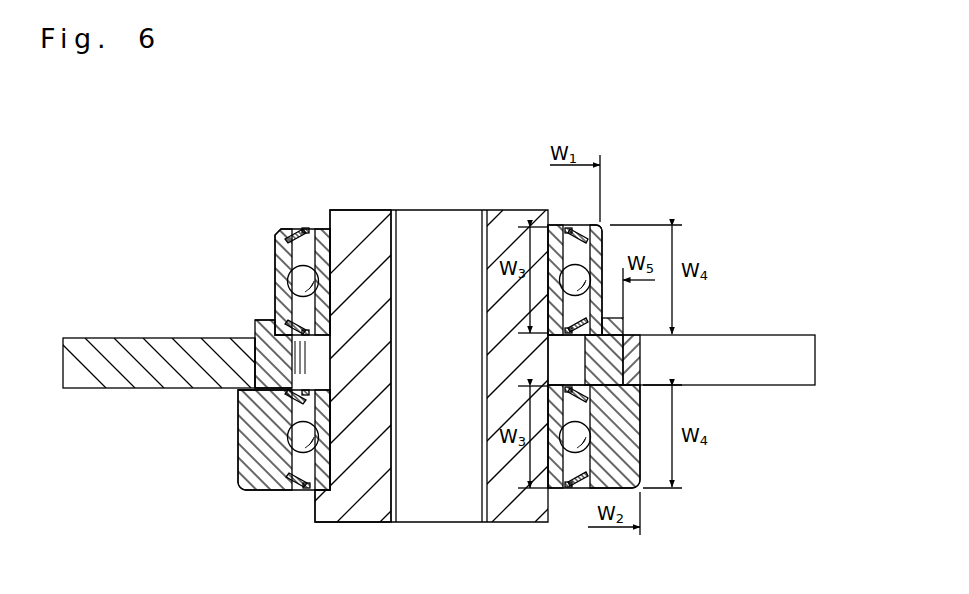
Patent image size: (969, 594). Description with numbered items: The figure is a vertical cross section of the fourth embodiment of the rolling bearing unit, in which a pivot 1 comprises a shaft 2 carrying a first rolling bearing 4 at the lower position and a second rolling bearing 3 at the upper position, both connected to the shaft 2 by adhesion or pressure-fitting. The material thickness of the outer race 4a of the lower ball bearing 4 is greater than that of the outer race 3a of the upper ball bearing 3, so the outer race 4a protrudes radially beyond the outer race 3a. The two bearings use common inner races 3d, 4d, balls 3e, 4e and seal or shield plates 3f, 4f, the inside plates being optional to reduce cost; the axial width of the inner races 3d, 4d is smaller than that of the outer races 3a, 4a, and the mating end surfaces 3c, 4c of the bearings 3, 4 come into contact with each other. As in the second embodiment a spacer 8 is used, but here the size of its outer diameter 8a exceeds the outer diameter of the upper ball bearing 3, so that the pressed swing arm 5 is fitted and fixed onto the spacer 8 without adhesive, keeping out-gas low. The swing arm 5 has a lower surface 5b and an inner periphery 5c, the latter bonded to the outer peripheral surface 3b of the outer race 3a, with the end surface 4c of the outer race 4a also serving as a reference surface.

The pivot 1 is at (369, 207).
The shaft 2 is at (346, 211).
The second rolling bearing 3 is at (313, 280).
The outer race 3a is at (279, 284).
The outer peripheral surface 3b is at (260, 321).
The mating end surface 3c is at (258, 362).
The inner race 3d is at (331, 247).
The ball 3e is at (284, 241).
The seal plate 3f is at (302, 232).
The first rolling bearing 4 is at (276, 453).
The outer race 4a is at (247, 472).
The end surface 4c is at (250, 378).
The inner race 4d is at (331, 470).
The ball 4e is at (299, 444).
The seal plate 4f is at (299, 489).
The swing arm 5 is at (122, 353).
The lower surface 5b is at (257, 397).
The inner periphery 5c is at (228, 362).
The spacer 8 is at (627, 326).
The outer diameter of the spacer 8a is at (641, 357).